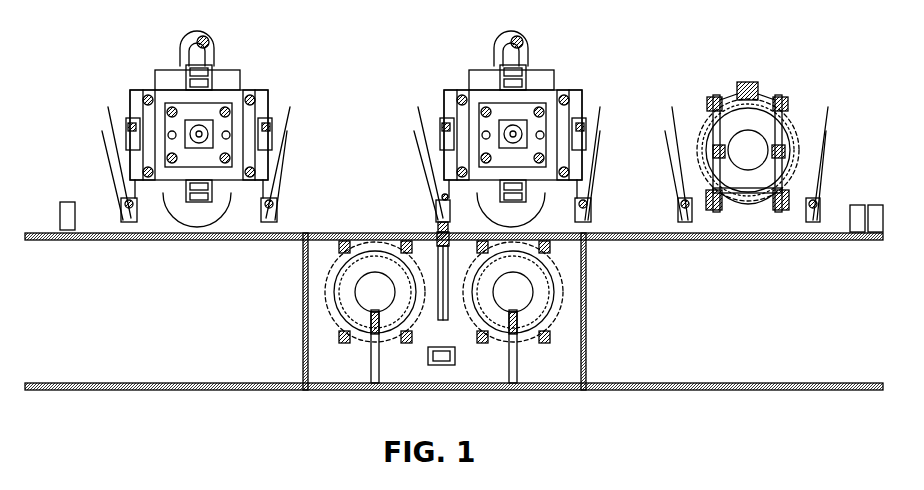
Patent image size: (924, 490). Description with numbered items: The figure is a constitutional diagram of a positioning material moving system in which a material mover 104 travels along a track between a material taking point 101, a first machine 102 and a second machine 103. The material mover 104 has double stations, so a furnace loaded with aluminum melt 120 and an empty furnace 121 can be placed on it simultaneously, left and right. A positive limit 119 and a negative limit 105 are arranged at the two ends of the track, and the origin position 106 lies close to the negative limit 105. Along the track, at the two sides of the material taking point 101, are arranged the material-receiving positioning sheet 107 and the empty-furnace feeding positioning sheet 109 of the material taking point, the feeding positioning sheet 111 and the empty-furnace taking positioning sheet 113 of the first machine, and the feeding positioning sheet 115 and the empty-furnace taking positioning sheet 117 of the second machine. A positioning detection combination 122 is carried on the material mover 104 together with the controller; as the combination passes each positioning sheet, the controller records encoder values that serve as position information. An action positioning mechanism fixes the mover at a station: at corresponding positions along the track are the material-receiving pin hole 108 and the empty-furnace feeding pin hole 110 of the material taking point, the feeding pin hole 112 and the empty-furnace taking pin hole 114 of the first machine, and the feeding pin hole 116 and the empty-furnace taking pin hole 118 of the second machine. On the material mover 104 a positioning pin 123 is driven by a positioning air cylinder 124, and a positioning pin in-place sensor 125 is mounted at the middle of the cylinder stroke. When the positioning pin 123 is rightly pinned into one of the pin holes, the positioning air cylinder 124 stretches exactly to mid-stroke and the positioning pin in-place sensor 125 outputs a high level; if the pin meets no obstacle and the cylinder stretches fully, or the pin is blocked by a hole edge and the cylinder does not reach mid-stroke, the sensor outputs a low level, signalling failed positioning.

The material taking point 101 is at (740, 90).
The first machine 102 is at (467, 93).
The second machine 103 is at (200, 103).
The material mover 104 is at (328, 345).
The negative limit 105 is at (877, 205).
The origin position 106 is at (858, 206).
The material-receiving positioning sheet of material taking point 107 is at (856, 131).
The material-receiving pin hole of material taking point 108 is at (858, 107).
The empty-furnace feeding positioning sheet of material taking point 109 is at (665, 131).
The empty-furnace feeding pin hole of material taking point 110 is at (672, 107).
The feeding positioning sheet of first machine 111 is at (630, 131).
The feeding pin hole of first machine 112 is at (630, 107).
The empty-furnace taking positioning sheet of first machine 113 is at (414, 131).
The empty-furnace taking pin hole of first machine 114 is at (418, 107).
The feeding positioning sheet of second machine 115 is at (318, 131).
The feeding pin hole of second machine 116 is at (320, 107).
The empty-furnace taking positioning sheet of second machine 117 is at (102, 131).
The empty-furnace taking pin hole of second machine 118 is at (108, 107).
The positive limit 119 is at (65, 200).
The furnace loaded with aluminum melt 120 is at (335, 298).
The empty furnace 121 is at (537, 300).
The positioning detection combination 122 is at (438, 213).
The positioning pin 123 is at (440, 228).
The positioning air cylinder 124 is at (443, 243).
The positioning pin in-place sensor 125 is at (442, 246).